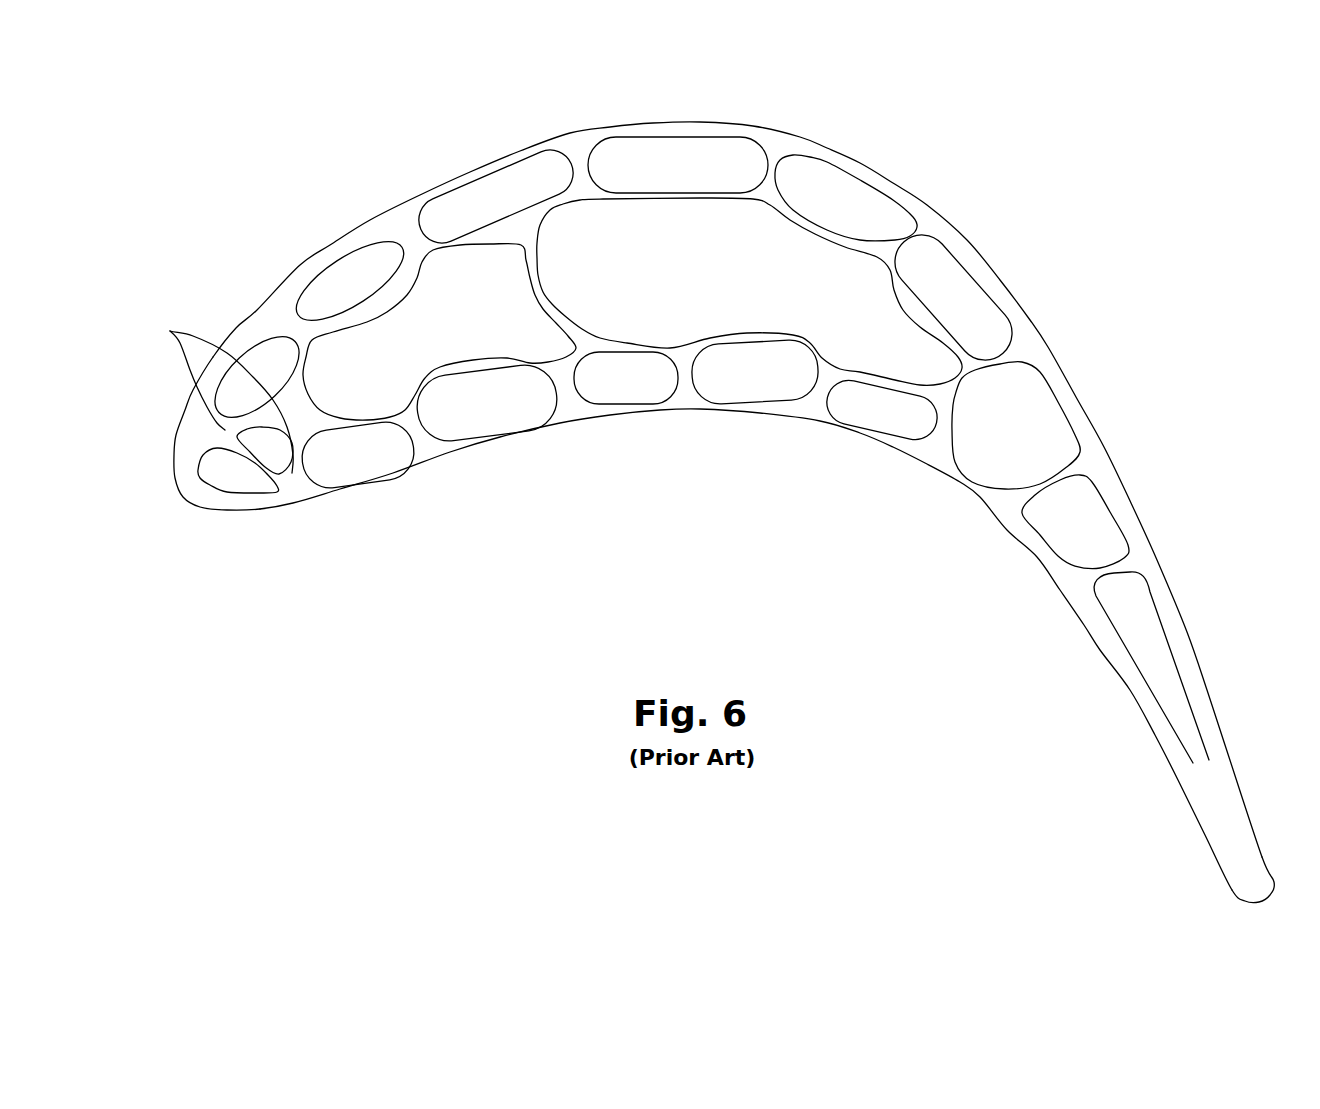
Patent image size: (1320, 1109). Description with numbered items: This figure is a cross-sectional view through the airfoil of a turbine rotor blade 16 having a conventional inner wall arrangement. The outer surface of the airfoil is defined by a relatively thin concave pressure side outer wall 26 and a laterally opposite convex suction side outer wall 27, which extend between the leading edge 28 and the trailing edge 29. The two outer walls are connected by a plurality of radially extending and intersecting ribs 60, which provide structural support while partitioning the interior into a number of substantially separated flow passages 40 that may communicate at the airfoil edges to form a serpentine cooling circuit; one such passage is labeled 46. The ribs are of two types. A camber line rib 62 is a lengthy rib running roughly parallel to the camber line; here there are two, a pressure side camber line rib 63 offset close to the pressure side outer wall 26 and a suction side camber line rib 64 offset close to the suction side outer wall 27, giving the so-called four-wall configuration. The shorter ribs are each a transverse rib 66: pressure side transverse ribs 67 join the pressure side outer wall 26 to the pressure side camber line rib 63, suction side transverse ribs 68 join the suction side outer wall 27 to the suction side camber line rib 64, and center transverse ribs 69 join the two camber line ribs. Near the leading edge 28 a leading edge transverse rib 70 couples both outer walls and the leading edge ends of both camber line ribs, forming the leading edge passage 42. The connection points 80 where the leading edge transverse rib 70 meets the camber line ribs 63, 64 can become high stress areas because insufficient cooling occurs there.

The turbine rotor blade 16 is at (282, 141).
The pressure side outer wall 26 is at (1007, 530).
The suction side outer wall 27 is at (450, 180).
The leading edge 28 is at (190, 498).
The trailing edge 29 is at (1247, 904).
The flow passages 40 is at (657, 160).
The leading edge passage 42 is at (233, 473).
The central cavity 46 is at (339, 370).
The ribs 60 is at (477, 243).
The camber line rib 62 is at (542, 275).
The pressure side camber line rib 63 is at (768, 337).
The suction side camber line rib 64 is at (373, 312).
The transverse rib 66 is at (599, 334).
The pressure side transverse ribs 67 is at (823, 383).
The suction side transverse ribs 68 is at (780, 177).
The center transverse ribs 69 is at (541, 295).
The leading edge transverse rib 70 is at (268, 473).
The connection points 80 is at (215, 395).